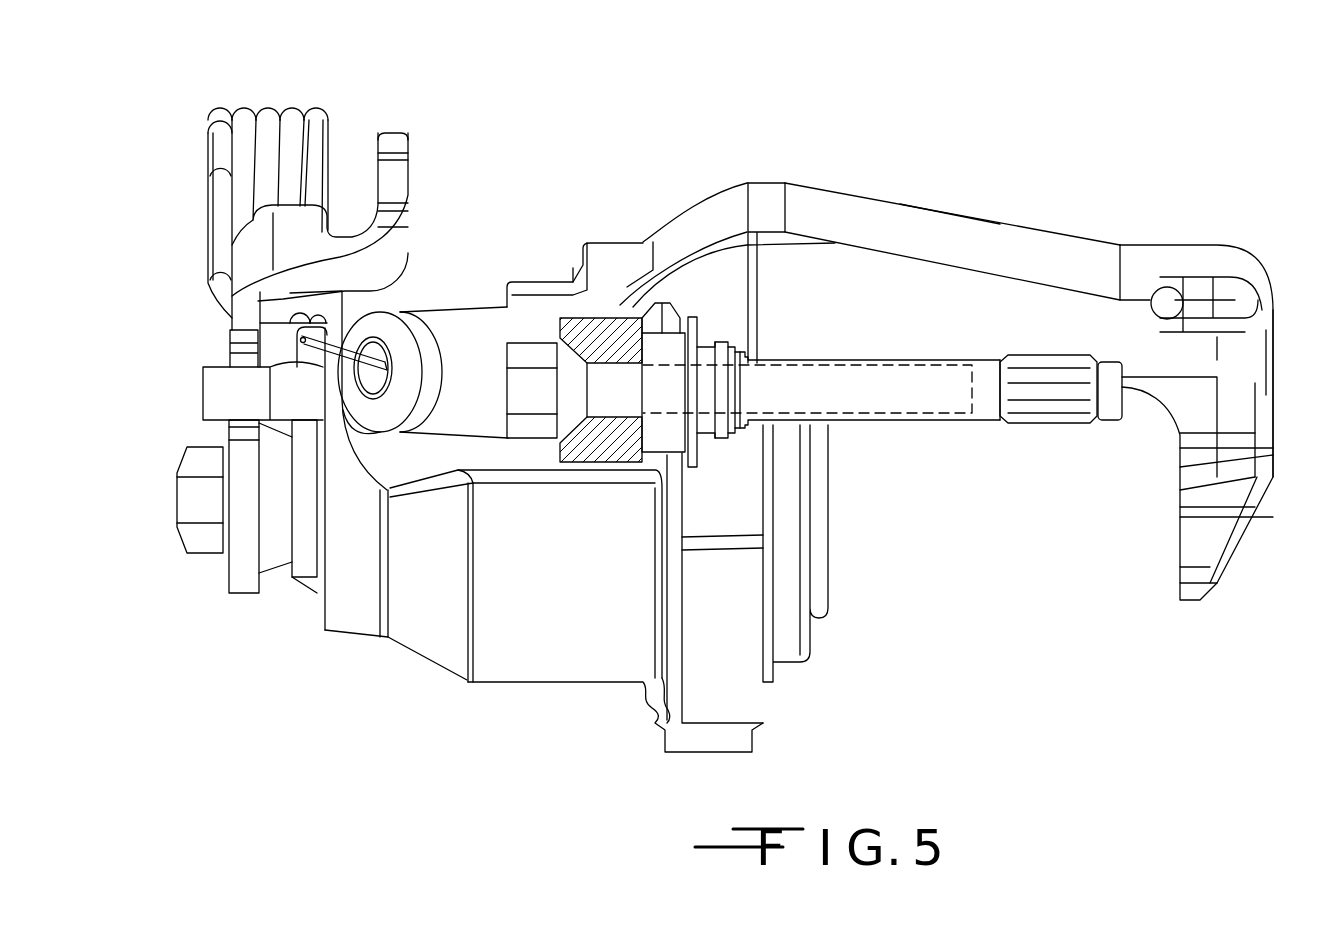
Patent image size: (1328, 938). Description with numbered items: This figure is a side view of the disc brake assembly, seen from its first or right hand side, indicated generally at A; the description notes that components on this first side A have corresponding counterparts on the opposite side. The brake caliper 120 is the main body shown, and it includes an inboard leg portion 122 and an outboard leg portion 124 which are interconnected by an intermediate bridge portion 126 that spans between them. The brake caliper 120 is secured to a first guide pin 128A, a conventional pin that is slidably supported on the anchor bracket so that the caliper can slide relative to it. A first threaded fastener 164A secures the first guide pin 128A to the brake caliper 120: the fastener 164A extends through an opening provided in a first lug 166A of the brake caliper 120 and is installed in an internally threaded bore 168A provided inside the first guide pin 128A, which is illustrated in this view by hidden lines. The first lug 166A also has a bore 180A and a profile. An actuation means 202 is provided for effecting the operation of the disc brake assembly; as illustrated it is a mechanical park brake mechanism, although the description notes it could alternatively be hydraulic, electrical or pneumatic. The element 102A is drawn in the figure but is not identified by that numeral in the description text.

The housing 102A is at (548, 476).
The brake caliper 120 is at (1083, 215).
The inboard leg portion 122 is at (682, 230).
The outboard leg portion 124 is at (1277, 397).
The intermediate bridge portion 126 is at (910, 240).
The first guide pin 128A is at (930, 423).
The first threaded fastener 164A is at (503, 413).
The first lug 166A is at (603, 470).
The internally threaded bore 168A is at (823, 390).
The bore 180A is at (600, 388).
The actuation means 202 is at (247, 463).
The first or right hand side A is at (816, 160).